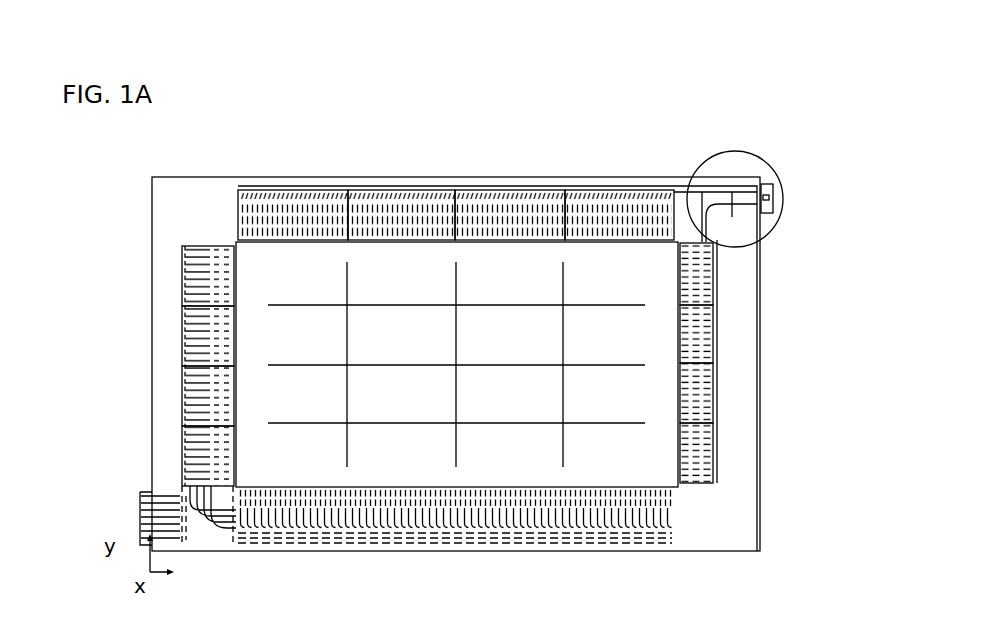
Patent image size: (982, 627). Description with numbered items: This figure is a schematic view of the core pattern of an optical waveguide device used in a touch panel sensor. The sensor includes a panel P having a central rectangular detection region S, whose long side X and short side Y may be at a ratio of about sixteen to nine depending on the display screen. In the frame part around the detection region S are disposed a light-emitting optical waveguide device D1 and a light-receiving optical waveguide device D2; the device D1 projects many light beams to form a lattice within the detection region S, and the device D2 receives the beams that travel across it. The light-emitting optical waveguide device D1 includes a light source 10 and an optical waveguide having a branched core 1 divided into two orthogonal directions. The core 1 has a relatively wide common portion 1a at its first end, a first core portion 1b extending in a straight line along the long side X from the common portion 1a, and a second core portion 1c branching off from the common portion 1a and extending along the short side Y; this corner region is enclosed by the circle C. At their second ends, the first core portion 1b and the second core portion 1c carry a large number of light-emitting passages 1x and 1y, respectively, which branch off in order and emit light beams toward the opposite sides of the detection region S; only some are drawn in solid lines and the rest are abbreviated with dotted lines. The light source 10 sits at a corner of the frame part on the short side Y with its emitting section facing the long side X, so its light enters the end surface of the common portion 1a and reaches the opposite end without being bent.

The panel P is at (206, 166).
The core 1 is at (748, 214).
The light-emitting passages 1x is at (298, 216).
The first core portion 1b is at (398, 190).
The light-emitting passages 1y is at (715, 330).
The second core portion 1c is at (720, 214).
The common portion 1a is at (746, 186).
The light source 10 is at (773, 197).
The circle C is at (718, 154).
The detection region S is at (457, 364).
The long side X is at (457, 190).
The short side Y is at (760, 365).
The light-emitting optical waveguide device D1 is at (668, 183).
The light-receiving optical waveguide device D2 is at (192, 548).